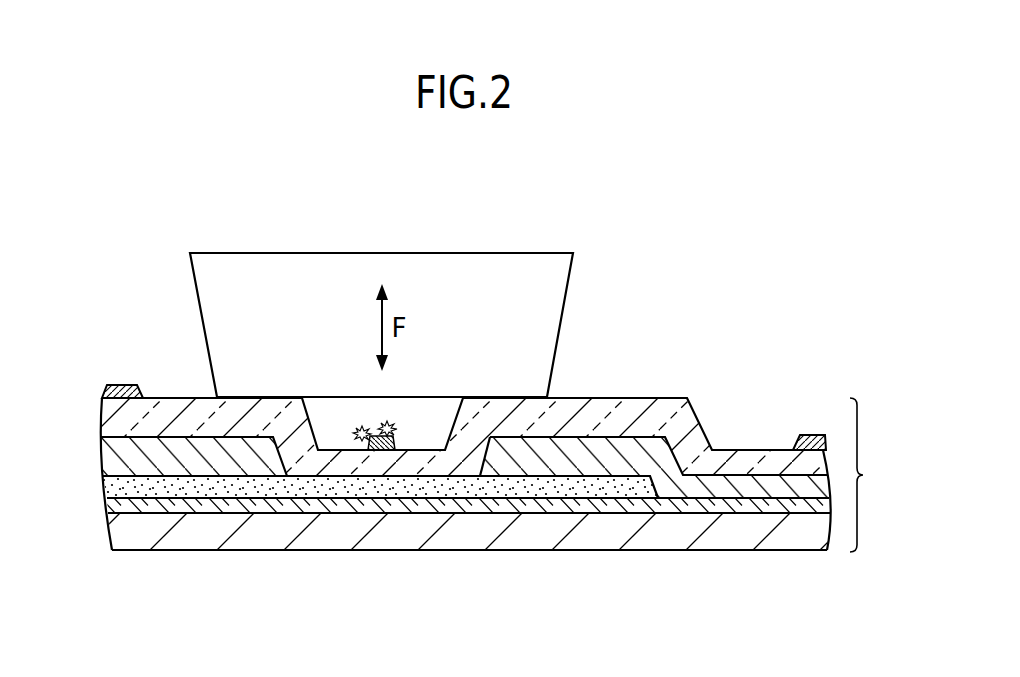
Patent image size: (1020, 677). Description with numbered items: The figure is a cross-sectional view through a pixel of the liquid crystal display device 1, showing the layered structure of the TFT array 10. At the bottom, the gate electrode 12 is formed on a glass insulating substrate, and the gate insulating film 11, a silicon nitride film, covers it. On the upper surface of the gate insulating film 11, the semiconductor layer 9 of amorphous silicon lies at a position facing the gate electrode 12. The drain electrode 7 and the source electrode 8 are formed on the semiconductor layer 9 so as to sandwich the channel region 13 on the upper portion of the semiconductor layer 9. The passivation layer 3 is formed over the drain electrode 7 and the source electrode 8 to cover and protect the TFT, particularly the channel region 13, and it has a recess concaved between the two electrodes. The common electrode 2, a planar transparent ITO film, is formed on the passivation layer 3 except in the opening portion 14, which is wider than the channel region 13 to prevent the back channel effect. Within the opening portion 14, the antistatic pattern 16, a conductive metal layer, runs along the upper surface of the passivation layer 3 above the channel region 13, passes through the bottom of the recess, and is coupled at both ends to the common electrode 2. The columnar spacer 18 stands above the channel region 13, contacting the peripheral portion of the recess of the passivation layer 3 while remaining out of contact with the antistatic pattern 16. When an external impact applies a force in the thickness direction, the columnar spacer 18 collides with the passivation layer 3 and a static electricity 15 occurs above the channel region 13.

The liquid crystal display device 1 is at (726, 231).
The common electrode 2 is at (107, 392).
The passivation layer 3 is at (105, 423).
The drain electrode 7 is at (115, 458).
The source electrode 8 is at (737, 485).
The semiconductor layer 9 is at (108, 488).
The TFT array 10 is at (872, 475).
The gate insulating film 11 is at (118, 503).
The gate electrode 12 is at (118, 533).
The channel region 13 is at (418, 479).
The opening portion 14 is at (345, 418).
The static electricity 15 is at (362, 440).
The antistatic pattern 16 is at (383, 438).
The columnar spacer 18 is at (557, 288).